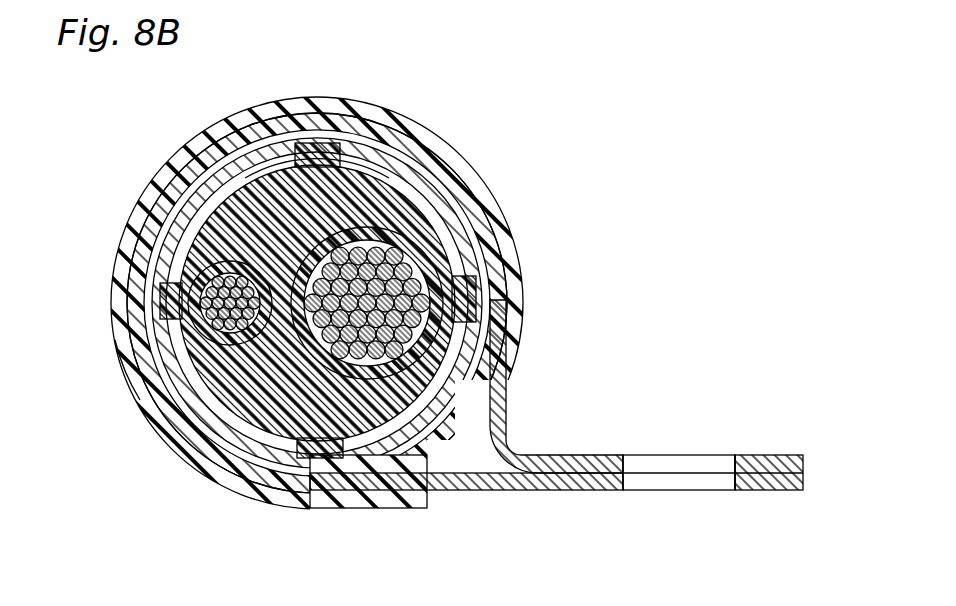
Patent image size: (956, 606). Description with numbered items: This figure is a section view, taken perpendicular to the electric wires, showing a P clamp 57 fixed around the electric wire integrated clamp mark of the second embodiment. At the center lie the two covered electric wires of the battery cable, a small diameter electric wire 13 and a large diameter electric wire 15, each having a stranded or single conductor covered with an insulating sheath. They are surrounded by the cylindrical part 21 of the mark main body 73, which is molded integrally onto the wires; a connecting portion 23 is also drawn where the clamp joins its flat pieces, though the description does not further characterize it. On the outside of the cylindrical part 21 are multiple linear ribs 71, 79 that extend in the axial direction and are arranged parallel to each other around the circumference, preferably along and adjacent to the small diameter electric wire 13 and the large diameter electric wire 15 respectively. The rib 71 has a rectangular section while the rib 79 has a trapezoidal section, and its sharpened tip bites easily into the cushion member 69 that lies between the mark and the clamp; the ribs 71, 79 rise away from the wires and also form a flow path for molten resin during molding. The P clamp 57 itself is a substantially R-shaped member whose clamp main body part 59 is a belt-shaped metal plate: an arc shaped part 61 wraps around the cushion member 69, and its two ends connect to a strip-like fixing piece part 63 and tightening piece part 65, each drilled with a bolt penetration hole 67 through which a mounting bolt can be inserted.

The small diameter electric wire 13 is at (198, 262).
The large diameter electric wire 15 is at (422, 244).
The cylindrical part 21 is at (232, 178).
The connecting portion 23 is at (480, 430).
The P clamp 57 is at (527, 262).
The clamp main body part 59 is at (557, 487).
The arc shaped part 61 is at (162, 182).
The fixing piece part 63 is at (780, 490).
The tightening piece part 65 is at (775, 455).
The bolt penetration hole 67 is at (625, 462).
The cushion member 69 is at (136, 400).
The rib 71 is at (333, 148).
The mark main body 73 is at (385, 158).
The rib 79 is at (200, 190).